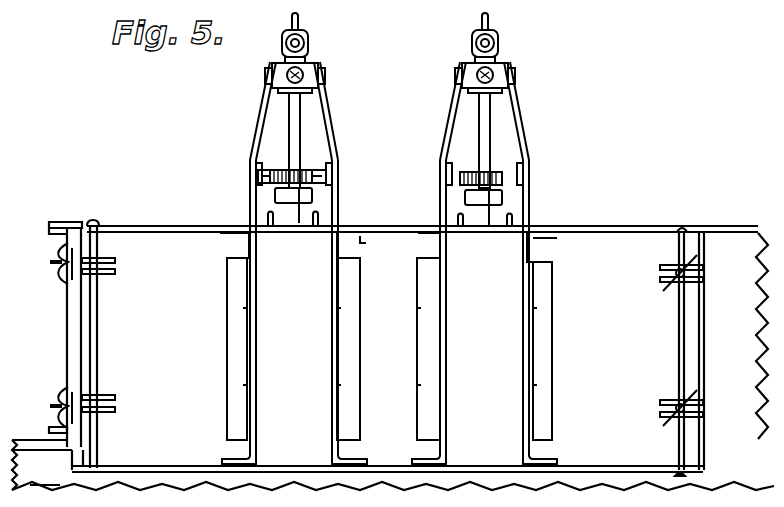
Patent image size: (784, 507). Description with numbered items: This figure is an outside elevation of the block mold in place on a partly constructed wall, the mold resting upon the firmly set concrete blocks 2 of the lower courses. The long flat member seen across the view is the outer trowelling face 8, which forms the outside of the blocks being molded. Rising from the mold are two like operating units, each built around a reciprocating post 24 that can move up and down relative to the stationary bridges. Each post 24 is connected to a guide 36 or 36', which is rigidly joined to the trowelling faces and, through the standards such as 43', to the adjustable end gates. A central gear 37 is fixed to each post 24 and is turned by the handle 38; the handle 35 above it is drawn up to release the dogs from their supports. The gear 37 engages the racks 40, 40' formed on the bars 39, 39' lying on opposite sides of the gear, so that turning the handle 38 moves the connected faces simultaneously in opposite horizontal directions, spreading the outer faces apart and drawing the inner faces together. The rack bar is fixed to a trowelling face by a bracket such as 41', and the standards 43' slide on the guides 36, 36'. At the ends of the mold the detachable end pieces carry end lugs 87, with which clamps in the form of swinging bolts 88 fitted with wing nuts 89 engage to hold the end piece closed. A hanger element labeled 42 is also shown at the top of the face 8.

The firmly set concrete blocks 2 is at (53, 480).
The outer trowelling face 8 is at (393, 355).
The reciprocating post 24 is at (302, 133).
The handle 35 is at (300, 22).
The guide 36 is at (271, 83).
The guide 36' is at (492, 119).
The central gear 37 is at (312, 176).
The handle 38 is at (306, 44).
The rack bar 39 is at (235, 166).
The rack bar 39' is at (345, 171).
The rack 40 is at (234, 183).
The rack 40' is at (345, 187).
The bracket 41' is at (447, 336).
The hanger plate 42 is at (219, 336).
The standard 43' is at (300, 312).
The end lug 87 is at (104, 272).
The swinging bolt 88 is at (60, 262).
The wing nut 89 is at (62, 276).